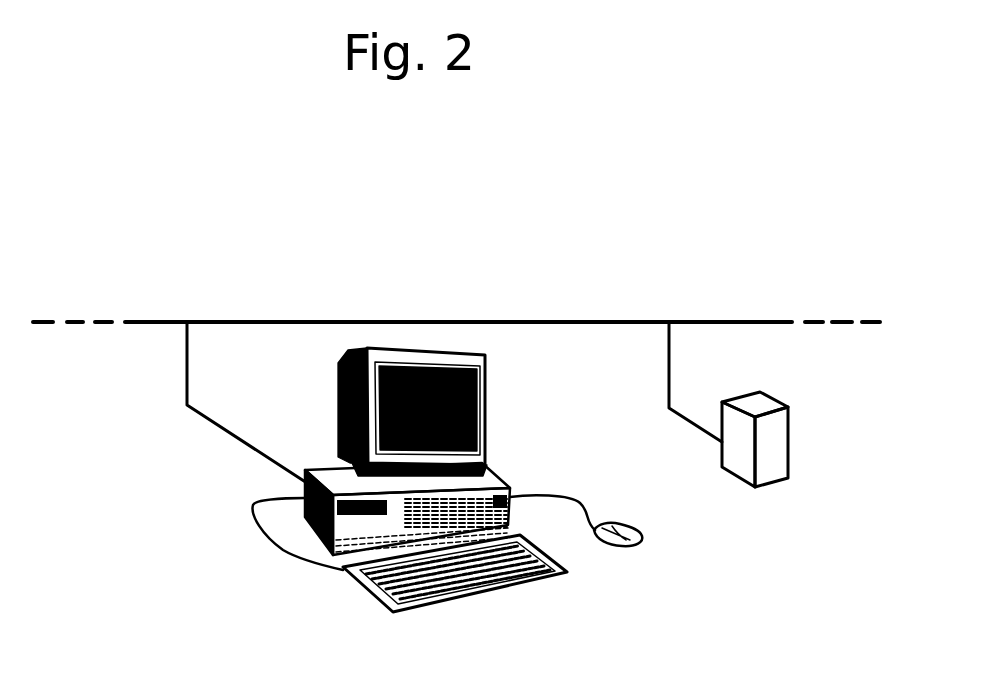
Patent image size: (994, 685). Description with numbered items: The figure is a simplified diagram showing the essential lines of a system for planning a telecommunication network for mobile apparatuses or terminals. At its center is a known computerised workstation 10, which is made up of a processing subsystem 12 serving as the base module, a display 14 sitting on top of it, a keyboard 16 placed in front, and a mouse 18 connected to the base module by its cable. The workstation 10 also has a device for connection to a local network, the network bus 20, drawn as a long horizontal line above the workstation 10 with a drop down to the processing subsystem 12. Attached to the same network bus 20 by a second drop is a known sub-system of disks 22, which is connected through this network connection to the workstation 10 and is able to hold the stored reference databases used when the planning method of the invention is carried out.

The computerised workstation 10 is at (252, 574).
The processing subsystem 12 is at (325, 473).
The display 14 is at (485, 413).
The keyboard 16 is at (505, 587).
The mouse 18 is at (642, 533).
The network bus 20 is at (273, 320).
The sub-system of disks 22 is at (767, 455).